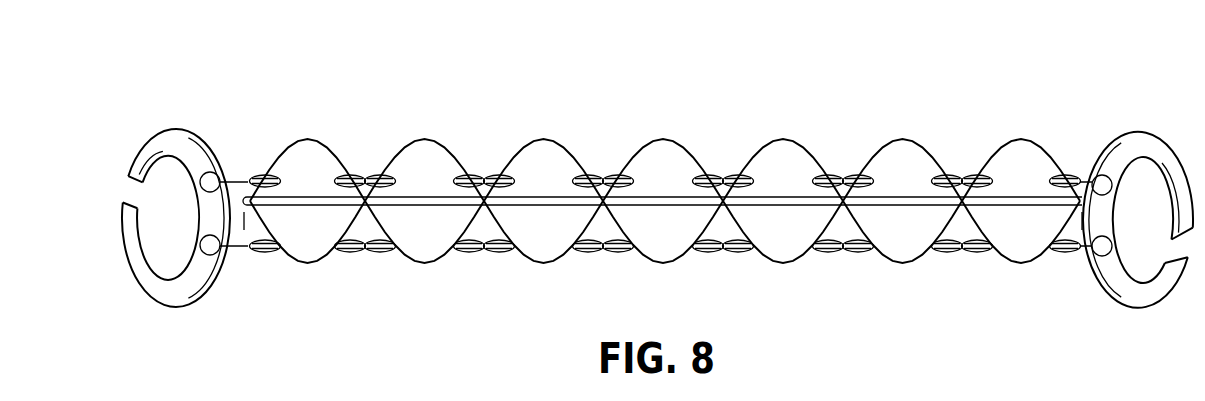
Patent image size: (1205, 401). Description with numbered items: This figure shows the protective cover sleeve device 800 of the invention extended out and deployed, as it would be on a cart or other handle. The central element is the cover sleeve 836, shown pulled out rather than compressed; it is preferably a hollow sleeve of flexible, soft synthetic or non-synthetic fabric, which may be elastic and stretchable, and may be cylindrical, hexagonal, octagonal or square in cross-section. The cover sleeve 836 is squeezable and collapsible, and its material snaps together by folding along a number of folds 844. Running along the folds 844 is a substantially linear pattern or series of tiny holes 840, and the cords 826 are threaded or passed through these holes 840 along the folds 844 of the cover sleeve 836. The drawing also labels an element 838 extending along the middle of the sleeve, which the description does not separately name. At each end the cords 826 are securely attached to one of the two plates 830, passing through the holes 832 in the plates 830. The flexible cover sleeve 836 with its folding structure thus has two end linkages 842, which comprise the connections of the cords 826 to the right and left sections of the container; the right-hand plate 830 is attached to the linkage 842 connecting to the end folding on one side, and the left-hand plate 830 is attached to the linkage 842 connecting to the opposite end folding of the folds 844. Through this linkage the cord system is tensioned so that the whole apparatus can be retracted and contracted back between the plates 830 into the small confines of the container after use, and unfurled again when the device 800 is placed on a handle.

The protective cover sleeve device 800 is at (386, 77).
The cords 826 is at (480, 177).
The plates 830 is at (163, 131).
The holes 832 is at (209, 180).
The cover sleeve 836 is at (694, 138).
The central shaft 838 is at (423, 207).
The holes 840 is at (255, 178).
The end linkages 842 is at (246, 231).
The folds 844 is at (573, 153).